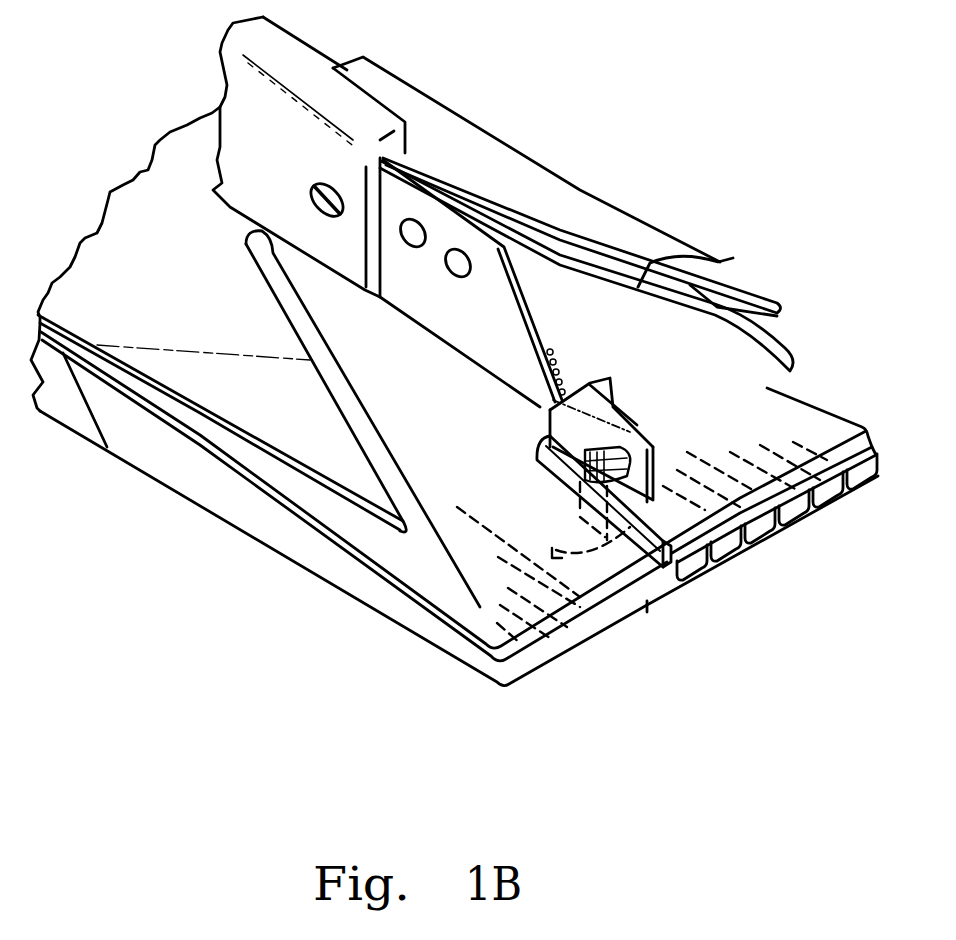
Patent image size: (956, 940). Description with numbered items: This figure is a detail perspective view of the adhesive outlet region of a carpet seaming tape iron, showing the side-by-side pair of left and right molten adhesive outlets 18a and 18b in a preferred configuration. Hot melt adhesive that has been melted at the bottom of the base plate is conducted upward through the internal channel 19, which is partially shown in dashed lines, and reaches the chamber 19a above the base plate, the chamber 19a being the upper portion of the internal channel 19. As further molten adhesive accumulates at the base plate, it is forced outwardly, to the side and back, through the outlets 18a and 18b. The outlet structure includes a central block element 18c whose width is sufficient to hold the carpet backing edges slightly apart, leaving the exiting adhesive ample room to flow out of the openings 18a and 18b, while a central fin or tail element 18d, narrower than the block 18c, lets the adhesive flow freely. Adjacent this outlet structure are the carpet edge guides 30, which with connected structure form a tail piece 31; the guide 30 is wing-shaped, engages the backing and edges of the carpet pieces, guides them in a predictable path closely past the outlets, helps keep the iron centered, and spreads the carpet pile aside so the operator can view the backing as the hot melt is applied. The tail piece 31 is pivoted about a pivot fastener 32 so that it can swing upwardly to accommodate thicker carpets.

The left outlet 18a is at (578, 497).
The right outlet 18b is at (636, 430).
The central block element 18c is at (600, 410).
The central fin or tail element 18d is at (653, 448).
The internal channel 19 is at (580, 513).
The chamber 19a is at (583, 463).
The carpet edge guide 30 is at (586, 264).
The tail piece 31 is at (445, 352).
The pivot fastener 32 is at (332, 187).